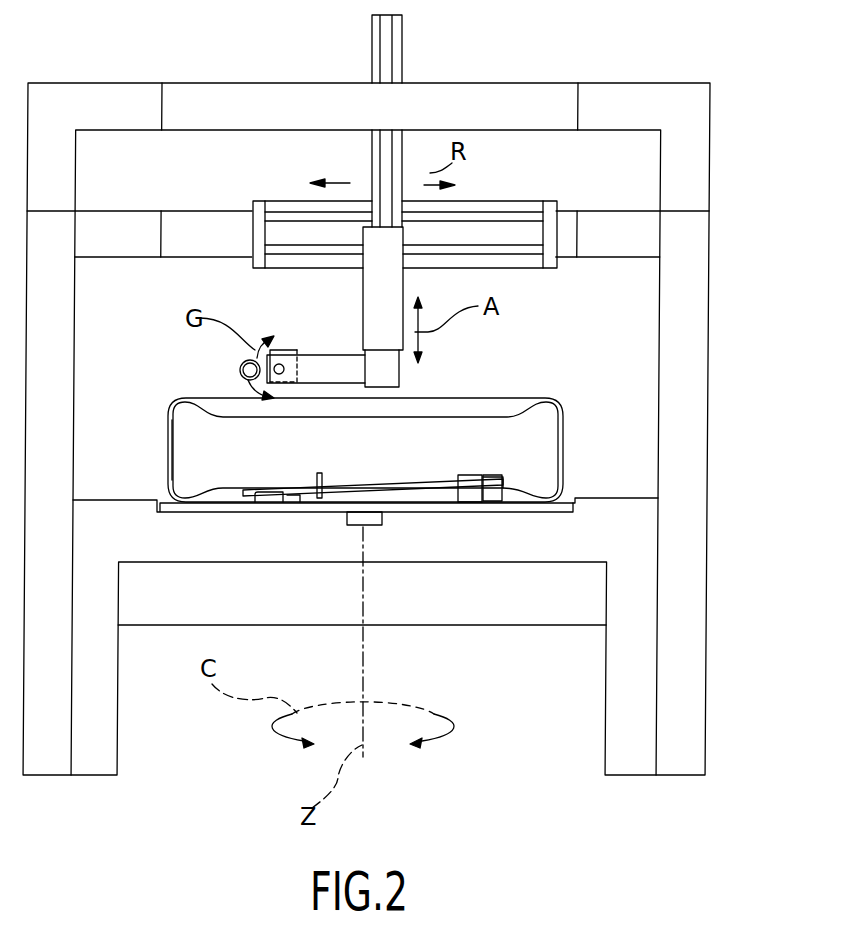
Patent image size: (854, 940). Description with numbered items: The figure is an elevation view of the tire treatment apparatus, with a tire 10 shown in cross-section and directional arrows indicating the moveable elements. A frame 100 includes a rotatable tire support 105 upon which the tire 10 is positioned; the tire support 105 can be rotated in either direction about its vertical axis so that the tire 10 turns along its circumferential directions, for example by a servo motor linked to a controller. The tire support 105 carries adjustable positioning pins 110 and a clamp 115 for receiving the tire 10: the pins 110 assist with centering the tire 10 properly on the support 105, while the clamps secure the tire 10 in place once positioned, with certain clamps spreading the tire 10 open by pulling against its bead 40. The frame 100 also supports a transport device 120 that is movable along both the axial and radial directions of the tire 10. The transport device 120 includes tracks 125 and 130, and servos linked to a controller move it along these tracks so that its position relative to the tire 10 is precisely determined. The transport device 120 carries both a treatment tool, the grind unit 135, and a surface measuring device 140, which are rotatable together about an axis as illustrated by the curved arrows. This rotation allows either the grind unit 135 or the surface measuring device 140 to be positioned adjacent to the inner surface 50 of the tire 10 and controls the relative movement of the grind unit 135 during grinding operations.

The tire 10 is at (482, 408).
The bead 40 is at (435, 483).
The inner surface 50 is at (190, 457).
The frame 100 is at (688, 360).
The tire support 105 is at (565, 503).
The positioning pins 110 is at (322, 475).
The clamp 115 is at (280, 503).
The transport device 120 is at (363, 297).
The track 125 is at (509, 235).
The track 130 is at (402, 38).
The grind unit 135 is at (240, 370).
The surface measuring device 140 is at (300, 372).